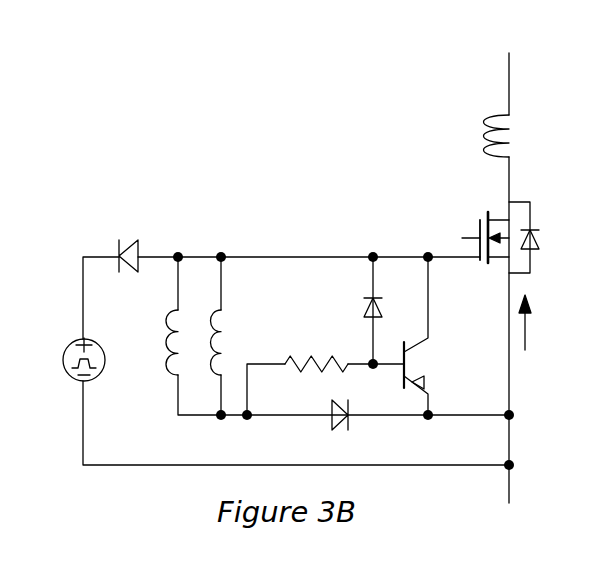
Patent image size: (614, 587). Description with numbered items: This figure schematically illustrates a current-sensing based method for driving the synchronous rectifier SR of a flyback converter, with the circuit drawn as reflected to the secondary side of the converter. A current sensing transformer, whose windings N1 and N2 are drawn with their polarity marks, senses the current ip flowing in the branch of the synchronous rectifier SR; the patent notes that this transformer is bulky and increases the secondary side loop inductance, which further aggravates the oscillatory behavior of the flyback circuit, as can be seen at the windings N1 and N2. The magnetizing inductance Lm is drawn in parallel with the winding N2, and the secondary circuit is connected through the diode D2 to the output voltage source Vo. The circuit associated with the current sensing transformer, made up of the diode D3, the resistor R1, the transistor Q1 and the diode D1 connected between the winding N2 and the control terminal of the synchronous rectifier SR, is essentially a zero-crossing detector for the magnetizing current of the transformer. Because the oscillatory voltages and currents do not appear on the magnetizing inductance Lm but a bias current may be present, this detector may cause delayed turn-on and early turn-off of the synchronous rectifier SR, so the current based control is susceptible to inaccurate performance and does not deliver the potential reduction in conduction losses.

The current sensing transformer winding N1 is at (487, 149).
The current sensing transformer winding N2 is at (163, 342).
The magnetizing inductance Lm is at (236, 334).
The synchronous rectifier SR is at (529, 237).
The primary current ip is at (535, 330).
The diode D1 is at (357, 425).
The diode D2 is at (126, 243).
The diode D3 is at (357, 304).
The resistor R1 is at (316, 350).
The transistor Q1 is at (418, 336).
The output voltage source Vo is at (68, 359).